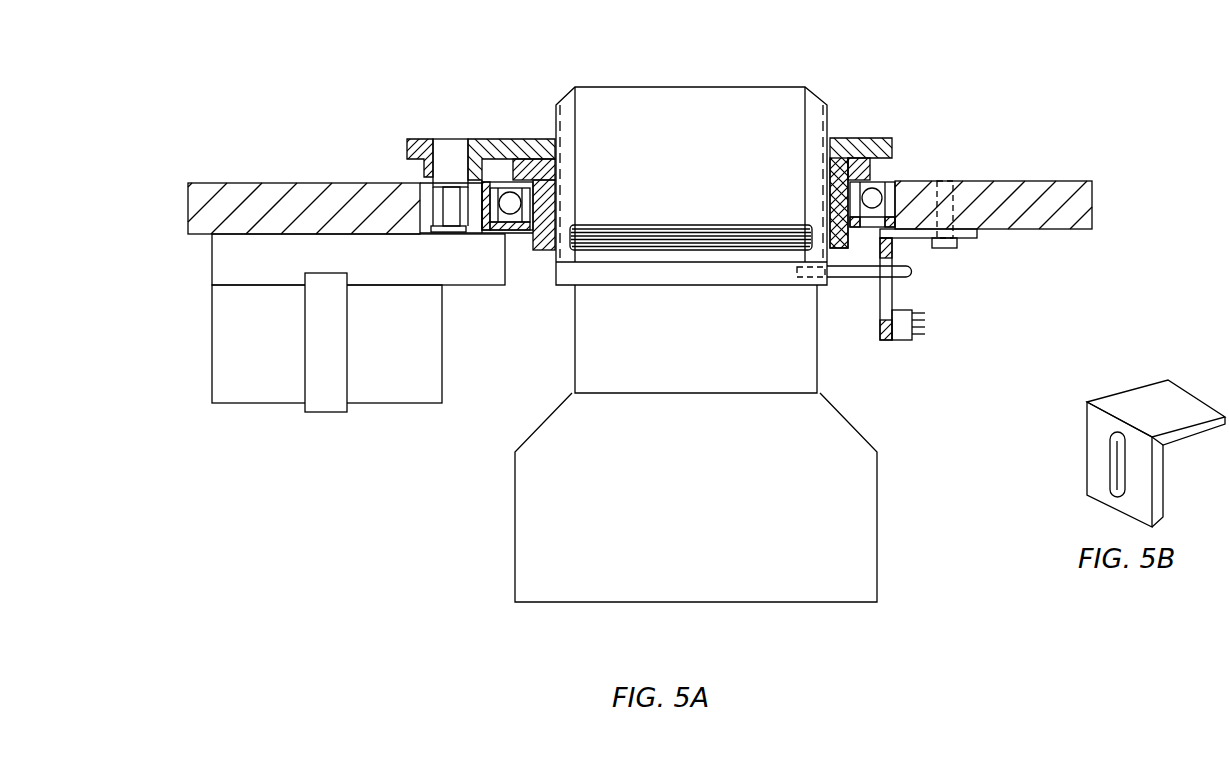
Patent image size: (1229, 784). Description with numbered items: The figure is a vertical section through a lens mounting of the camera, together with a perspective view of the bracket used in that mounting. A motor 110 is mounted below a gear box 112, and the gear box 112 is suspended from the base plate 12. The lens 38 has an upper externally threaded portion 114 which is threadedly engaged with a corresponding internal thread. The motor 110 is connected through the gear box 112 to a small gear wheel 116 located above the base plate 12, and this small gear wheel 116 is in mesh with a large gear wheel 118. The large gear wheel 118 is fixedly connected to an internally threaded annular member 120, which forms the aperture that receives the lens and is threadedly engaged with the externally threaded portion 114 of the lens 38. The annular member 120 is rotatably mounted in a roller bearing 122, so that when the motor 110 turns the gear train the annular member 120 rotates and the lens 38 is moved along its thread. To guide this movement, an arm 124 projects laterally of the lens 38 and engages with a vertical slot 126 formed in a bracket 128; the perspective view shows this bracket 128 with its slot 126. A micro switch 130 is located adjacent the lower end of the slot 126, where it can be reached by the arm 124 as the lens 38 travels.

In FIG. 5A, the base plate 12 is at (1058, 207).
In FIG. 5A, the lens 38 is at (858, 502).
In FIG. 5A, the motor 110 is at (220, 345).
In FIG. 5A, the gear box 112 is at (216, 268).
In FIG. 5A, the upper externally threaded portion 114 is at (625, 113).
In FIG. 5A, the small gear wheel 116 is at (407, 148).
In FIG. 5A, the large gear wheel 118 is at (518, 143).
In FIG. 5A, the internally threaded annular member 120 is at (868, 172).
In FIG. 5A, the roller bearing 122 is at (878, 205).
In FIG. 5A, the arm 124 is at (862, 270).
In FIG. 5A, the vertical slot 126 is at (885, 295).
In FIG. 5B, the vertical slot 126 is at (1115, 457).
In FIG. 5B, the bracket 128 is at (1167, 403).
In FIG. 5A, the micro switch 130 is at (898, 330).